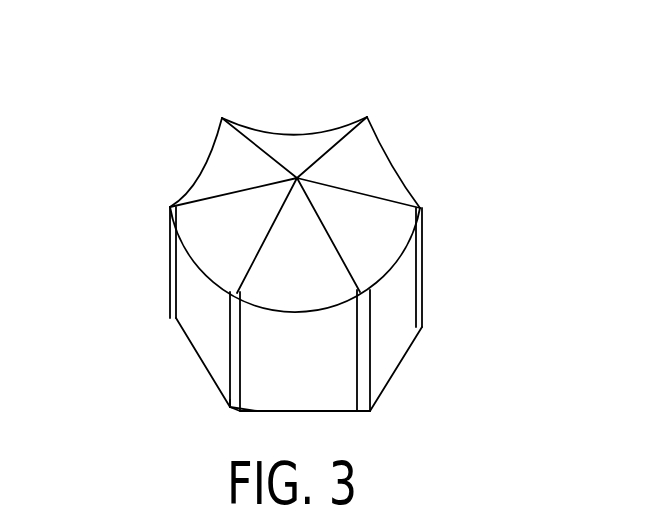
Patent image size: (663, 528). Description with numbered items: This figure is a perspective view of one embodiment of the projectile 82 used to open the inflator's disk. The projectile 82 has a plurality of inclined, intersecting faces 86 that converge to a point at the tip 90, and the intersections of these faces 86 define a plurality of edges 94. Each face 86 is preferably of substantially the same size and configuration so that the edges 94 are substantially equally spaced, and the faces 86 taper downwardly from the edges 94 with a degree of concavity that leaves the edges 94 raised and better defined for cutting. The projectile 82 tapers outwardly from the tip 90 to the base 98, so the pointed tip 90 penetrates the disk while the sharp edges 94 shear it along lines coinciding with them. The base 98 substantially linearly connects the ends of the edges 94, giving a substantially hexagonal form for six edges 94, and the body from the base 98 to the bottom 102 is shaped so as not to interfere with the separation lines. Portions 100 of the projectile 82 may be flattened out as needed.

The projectile 82 is at (393, 330).
The faces 86 is at (363, 160).
The tip 90 is at (297, 177).
The edges 94 is at (243, 135).
The base 98 is at (257, 411).
The flattened portions 100 is at (237, 355).
The bottom 102 is at (343, 412).